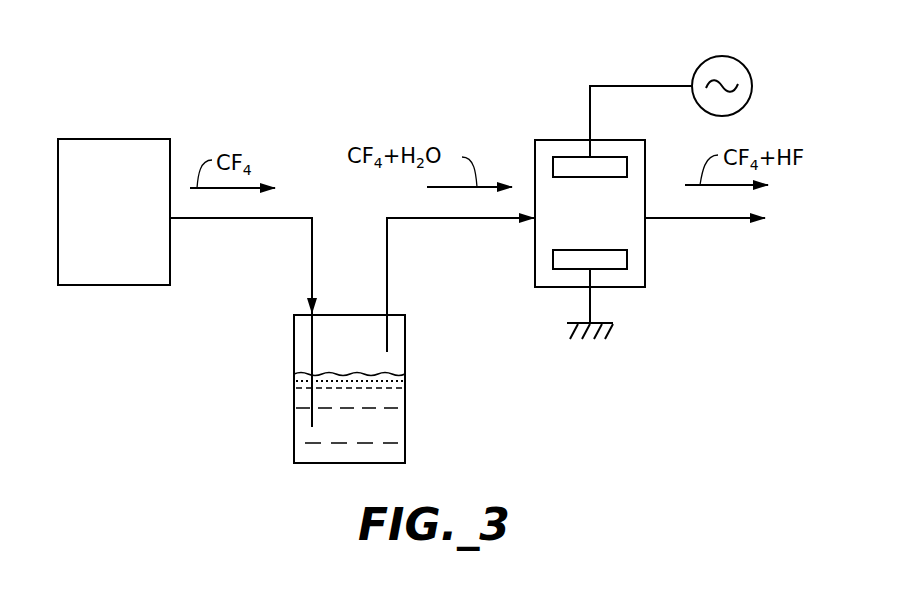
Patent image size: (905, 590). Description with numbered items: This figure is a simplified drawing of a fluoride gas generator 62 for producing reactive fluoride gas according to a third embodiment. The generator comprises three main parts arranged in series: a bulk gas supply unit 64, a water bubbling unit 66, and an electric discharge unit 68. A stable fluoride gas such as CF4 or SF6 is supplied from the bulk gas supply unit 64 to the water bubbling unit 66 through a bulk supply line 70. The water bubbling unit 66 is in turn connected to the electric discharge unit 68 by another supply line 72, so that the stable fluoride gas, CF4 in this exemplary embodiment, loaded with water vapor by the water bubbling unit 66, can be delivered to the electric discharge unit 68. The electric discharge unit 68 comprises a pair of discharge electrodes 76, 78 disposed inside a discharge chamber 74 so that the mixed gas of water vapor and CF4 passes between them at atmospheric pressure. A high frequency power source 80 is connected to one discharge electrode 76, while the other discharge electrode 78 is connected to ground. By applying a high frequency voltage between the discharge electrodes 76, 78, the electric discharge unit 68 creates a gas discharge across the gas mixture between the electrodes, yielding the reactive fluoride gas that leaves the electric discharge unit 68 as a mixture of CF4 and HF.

The fluoride gas generator 62 is at (531, 74).
The bulk gas supply unit 64 is at (99, 139).
The water bubbling unit 66 is at (300, 437).
The electric discharge unit 68 is at (647, 256).
The bulk supply line 70 is at (259, 221).
The supply line 72 is at (442, 220).
The discharge chamber 74 is at (557, 288).
The discharge electrode 76 is at (600, 157).
The discharge electrode 78 is at (614, 260).
The high frequency power source 80 is at (718, 58).